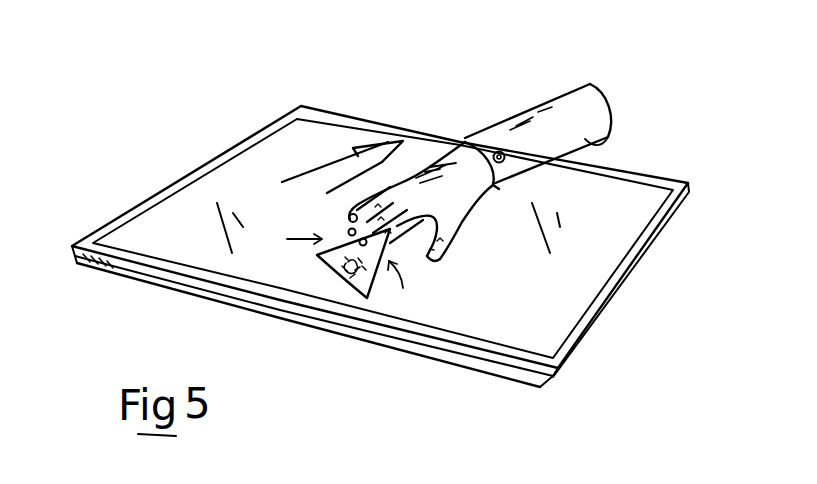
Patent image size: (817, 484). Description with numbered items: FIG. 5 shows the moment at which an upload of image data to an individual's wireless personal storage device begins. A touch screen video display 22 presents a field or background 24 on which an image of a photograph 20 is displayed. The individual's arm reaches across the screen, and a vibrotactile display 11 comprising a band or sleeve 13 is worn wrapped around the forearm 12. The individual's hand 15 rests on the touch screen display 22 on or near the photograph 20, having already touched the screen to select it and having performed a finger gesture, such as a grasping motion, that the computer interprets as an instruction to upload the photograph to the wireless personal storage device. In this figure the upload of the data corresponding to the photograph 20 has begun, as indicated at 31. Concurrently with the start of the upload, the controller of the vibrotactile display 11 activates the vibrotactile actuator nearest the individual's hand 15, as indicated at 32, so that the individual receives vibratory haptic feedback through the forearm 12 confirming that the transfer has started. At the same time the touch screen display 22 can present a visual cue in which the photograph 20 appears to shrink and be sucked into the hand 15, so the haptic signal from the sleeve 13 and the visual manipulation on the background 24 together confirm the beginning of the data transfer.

The vibrotactile display 11 is at (507, 103).
The forearm 12 is at (597, 83).
The sleeve 13 is at (586, 142).
The hand 15 is at (462, 240).
The photograph 20 is at (317, 257).
The touch screen video display 22 is at (706, 169).
The field or background 24 is at (574, 257).
The beginning of data upload 31 is at (338, 166).
The activation of the vibrotactile actuator nearest the hand 32 is at (517, 164).